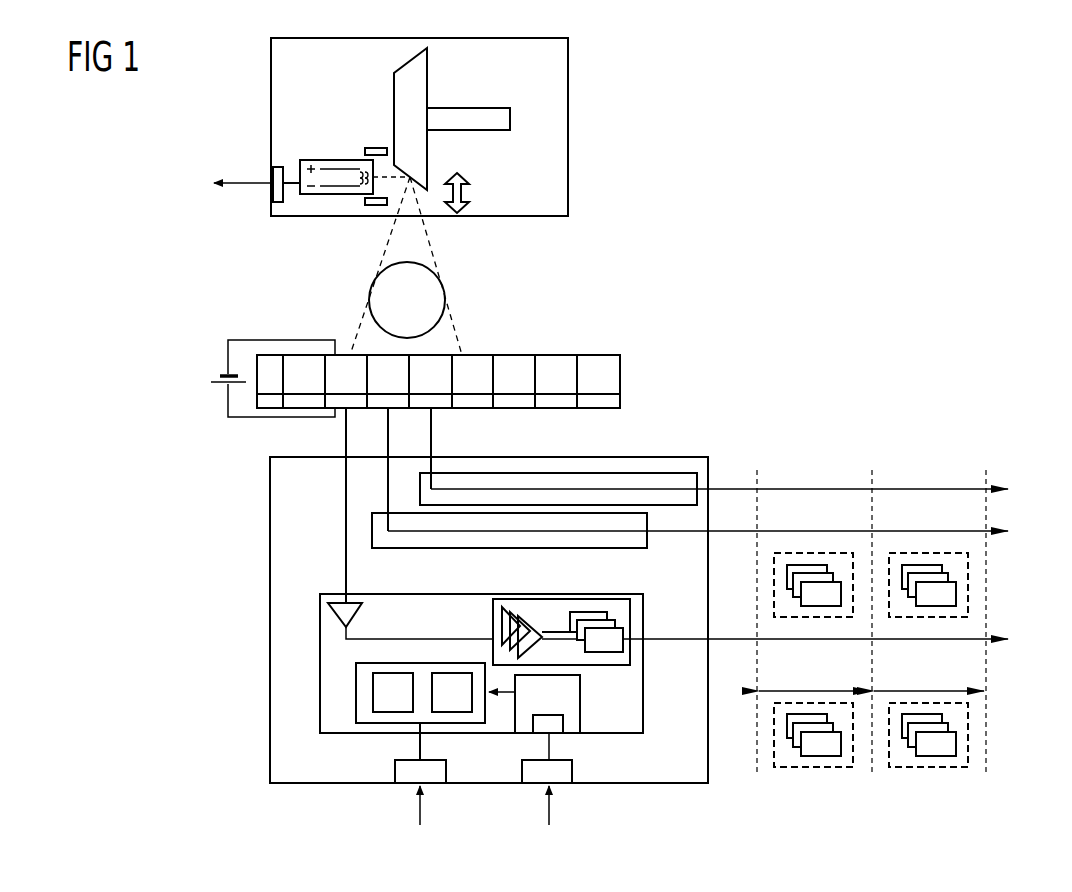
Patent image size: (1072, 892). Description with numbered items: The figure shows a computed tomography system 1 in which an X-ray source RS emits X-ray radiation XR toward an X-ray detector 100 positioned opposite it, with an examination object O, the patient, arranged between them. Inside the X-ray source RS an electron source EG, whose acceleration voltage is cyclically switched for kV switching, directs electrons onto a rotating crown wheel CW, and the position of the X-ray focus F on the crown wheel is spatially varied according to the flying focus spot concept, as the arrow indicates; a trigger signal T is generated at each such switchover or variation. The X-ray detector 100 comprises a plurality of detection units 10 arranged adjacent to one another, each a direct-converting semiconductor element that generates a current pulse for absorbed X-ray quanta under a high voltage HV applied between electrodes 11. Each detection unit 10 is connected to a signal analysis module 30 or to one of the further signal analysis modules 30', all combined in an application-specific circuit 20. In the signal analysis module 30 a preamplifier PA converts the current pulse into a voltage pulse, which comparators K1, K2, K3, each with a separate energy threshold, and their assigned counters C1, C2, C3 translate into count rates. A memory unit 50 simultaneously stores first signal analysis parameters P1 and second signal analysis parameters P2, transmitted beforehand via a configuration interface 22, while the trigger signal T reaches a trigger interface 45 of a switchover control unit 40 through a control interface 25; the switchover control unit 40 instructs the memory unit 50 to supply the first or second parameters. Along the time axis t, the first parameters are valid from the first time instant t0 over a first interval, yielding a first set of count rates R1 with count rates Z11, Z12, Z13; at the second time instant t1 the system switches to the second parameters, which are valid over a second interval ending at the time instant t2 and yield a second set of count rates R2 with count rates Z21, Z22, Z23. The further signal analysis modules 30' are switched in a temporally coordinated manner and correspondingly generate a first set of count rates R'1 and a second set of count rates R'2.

The computed tomography system 1 is at (848, 144).
The X-ray detector 100 is at (138, 391).
The X-ray source RS is at (568, 122).
The rotating crown wheel CW is at (428, 66).
The electron source EG is at (332, 158).
The X-ray focus F is at (412, 178).
The trigger signal T is at (577, 813).
The X-ray radiation XR is at (430, 242).
The examination object O is at (437, 288).
The detection unit 10 is at (382, 356).
The electrodes 11 is at (304, 400).
The high voltage HV is at (215, 378).
The application-specific circuit (ASIC) 20 is at (268, 603).
The further signal analysis modules 30' is at (540, 494).
The signal analysis module 30 is at (509, 663).
The preamplifier PA is at (362, 613).
The first comparator K1 is at (536, 632).
The second comparator K2 is at (525, 626).
The third comparator K3 is at (500, 620).
The first counter C1 is at (623, 645).
The second counter C2 is at (615, 624).
The third counter C3 is at (607, 613).
The memory unit 50 is at (355, 693).
The first signal analysis parameters P1 is at (393, 692).
The second signal analysis parameters P2 is at (452, 692).
The switchover control unit 40 is at (580, 698).
The trigger interface 45 is at (553, 727).
The configuration interface 22 is at (434, 784).
The control interface 25 is at (537, 784).
The time t is at (683, 621).
The first time instant t0 is at (987, 662).
The second time instant t1 is at (874, 662).
The third time instant t2 is at (759, 662).
The first set of count rates of further modules R'1 is at (928, 558).
The second set of count rates of further modules R'2 is at (813, 558).
The first set of count rates R1 is at (968, 747).
The second set of count rates R2 is at (774, 730).
The count rate Z11 is at (948, 757).
The count rate Z12 is at (908, 748).
The count rate Z13 is at (942, 718).
The count rate Z21 is at (835, 756).
The count rate Z22 is at (795, 748).
The count rate Z23 is at (787, 740).